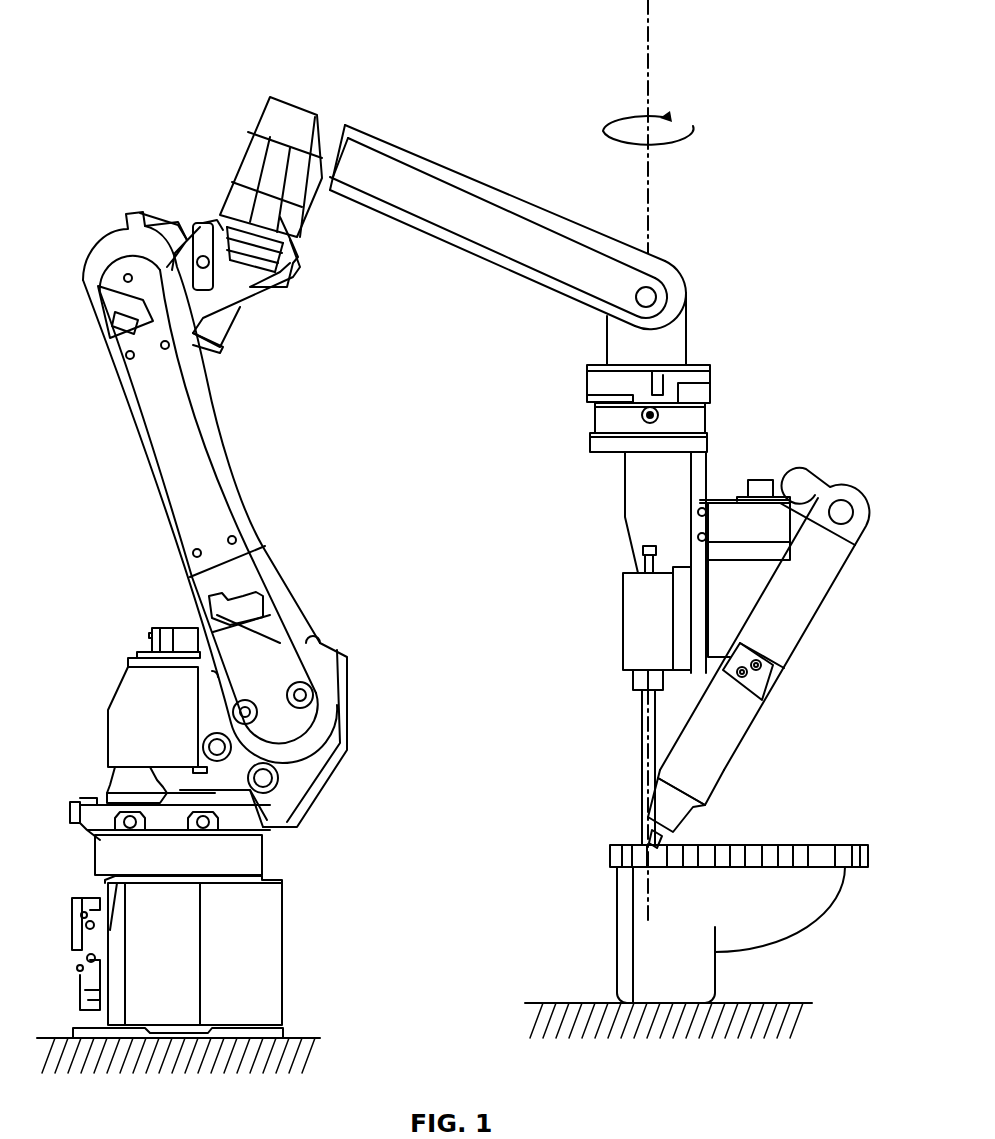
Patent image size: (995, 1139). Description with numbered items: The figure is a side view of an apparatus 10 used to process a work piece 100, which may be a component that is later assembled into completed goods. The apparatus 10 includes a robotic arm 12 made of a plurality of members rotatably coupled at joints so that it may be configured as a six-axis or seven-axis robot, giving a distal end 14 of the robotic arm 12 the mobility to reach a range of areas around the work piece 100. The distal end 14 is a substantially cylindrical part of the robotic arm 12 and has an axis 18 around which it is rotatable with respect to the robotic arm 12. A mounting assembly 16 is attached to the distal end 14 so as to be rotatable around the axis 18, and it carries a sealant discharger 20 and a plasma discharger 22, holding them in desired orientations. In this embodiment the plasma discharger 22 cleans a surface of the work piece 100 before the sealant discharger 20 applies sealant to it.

The apparatus 10 is at (800, 72).
The robotic arm 12 is at (497, 232).
The distal end 14 is at (705, 314).
The mounting assembly 16 is at (738, 378).
The axis 18 is at (648, 40).
The sealant discharger 20 is at (650, 622).
The plasma discharger 22 is at (773, 625).
The work piece 100 is at (802, 905).